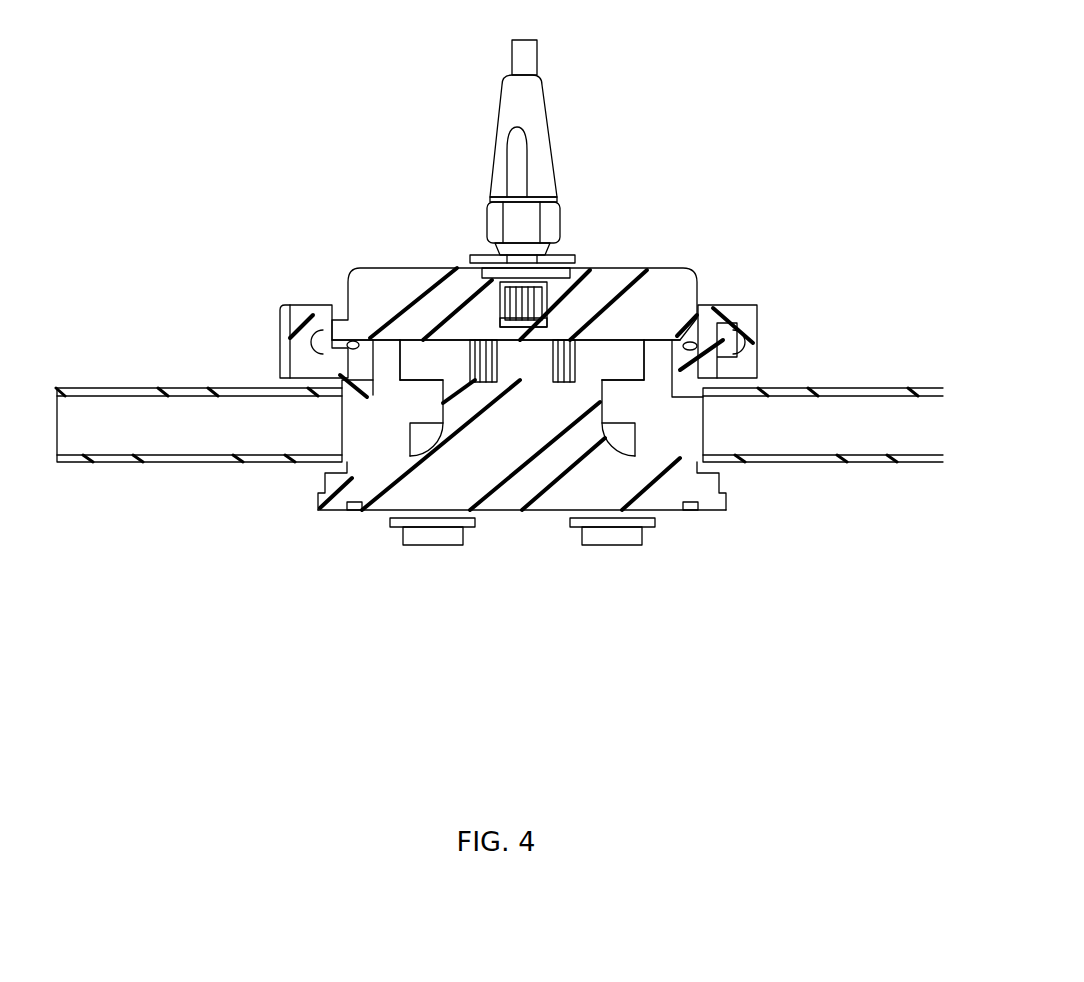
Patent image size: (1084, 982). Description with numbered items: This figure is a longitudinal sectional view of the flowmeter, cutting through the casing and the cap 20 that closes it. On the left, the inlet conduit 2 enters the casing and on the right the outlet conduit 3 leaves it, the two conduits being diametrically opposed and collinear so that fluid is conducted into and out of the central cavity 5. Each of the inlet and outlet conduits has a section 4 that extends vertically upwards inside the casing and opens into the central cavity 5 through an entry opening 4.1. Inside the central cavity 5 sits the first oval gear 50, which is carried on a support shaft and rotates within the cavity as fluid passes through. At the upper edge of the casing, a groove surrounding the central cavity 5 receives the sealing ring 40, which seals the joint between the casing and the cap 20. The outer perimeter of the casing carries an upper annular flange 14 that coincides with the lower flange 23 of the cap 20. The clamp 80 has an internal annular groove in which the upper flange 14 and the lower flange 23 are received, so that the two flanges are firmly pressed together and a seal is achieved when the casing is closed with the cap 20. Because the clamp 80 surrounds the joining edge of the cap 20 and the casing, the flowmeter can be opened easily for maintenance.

The inlet conduit 2 is at (203, 420).
The outlet conduit 3 is at (722, 420).
The section 4 is at (388, 378).
The entry opening 4.1 is at (420, 380).
The central cavity 5 is at (600, 357).
The upper annular flange 14 is at (328, 348).
The cap 20 is at (390, 290).
The lower flange 23 is at (330, 333).
The sealing ring 40 is at (690, 338).
The first oval gear 50 is at (525, 365).
The clamp 80 is at (742, 322).